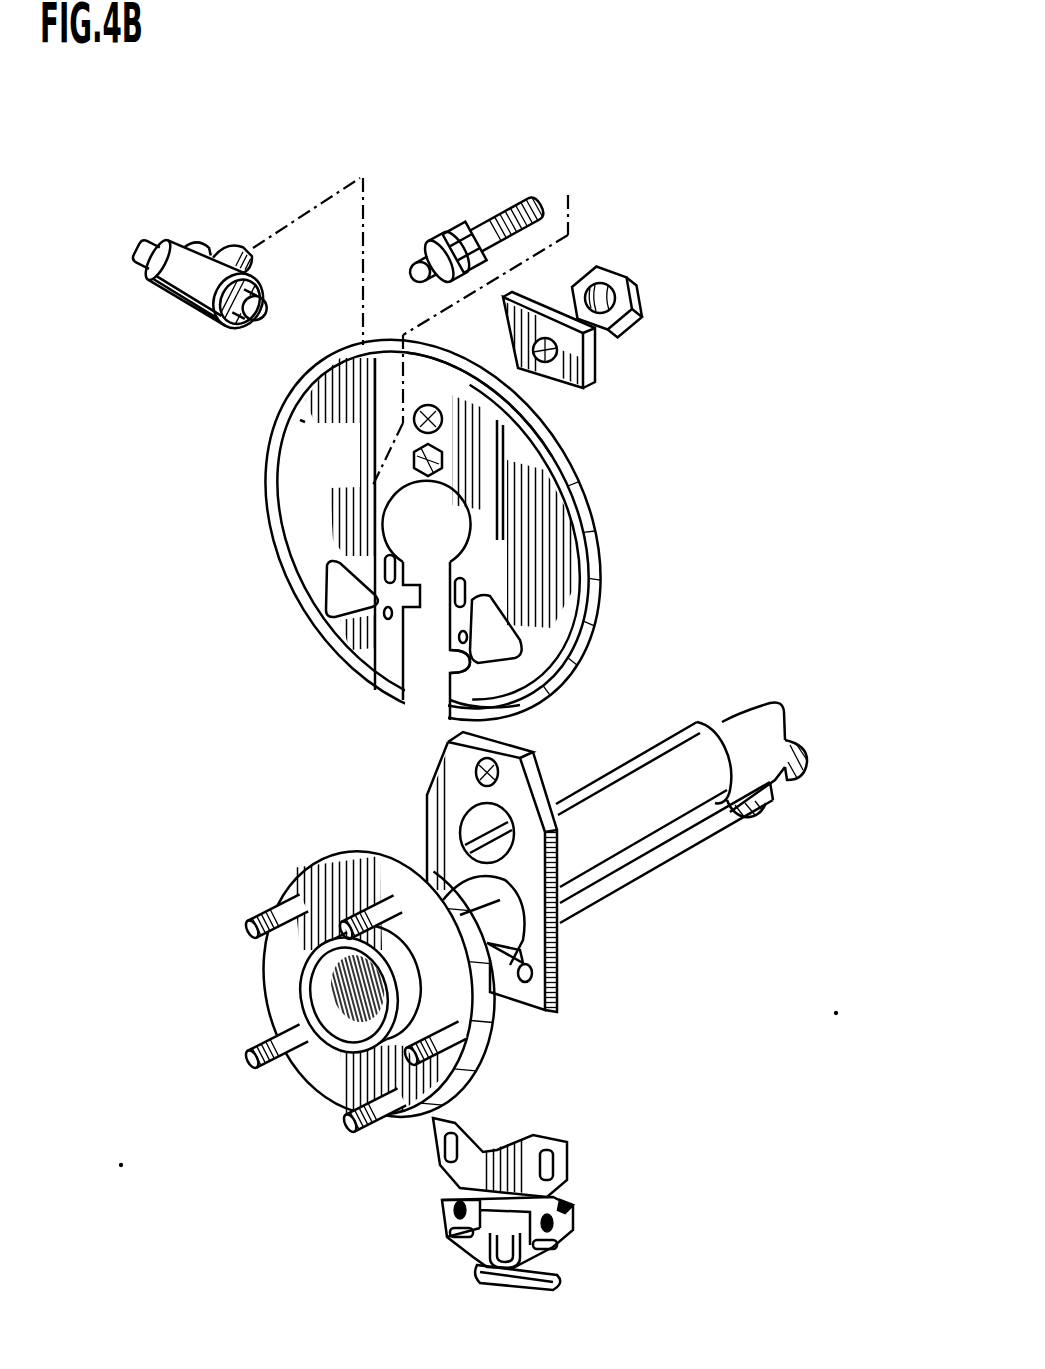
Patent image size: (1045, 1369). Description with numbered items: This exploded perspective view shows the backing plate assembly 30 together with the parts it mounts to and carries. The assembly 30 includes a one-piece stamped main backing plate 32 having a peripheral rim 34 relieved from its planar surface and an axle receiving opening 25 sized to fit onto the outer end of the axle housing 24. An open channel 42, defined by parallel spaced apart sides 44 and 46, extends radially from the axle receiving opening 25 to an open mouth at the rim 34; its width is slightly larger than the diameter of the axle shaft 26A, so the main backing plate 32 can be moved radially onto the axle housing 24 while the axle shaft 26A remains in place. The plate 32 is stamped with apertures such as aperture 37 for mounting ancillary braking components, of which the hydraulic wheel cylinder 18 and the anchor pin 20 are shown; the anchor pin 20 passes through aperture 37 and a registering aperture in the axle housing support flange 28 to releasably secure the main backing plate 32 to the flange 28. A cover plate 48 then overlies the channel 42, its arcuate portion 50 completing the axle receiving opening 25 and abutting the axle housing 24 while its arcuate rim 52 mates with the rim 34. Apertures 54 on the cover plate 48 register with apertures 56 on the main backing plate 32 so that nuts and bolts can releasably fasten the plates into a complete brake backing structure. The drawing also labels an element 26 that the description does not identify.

The hydraulic wheel cylinder 18 is at (192, 248).
The anchor pin 20 is at (606, 215).
The axle housing 24 is at (684, 856).
The axle receiving opening 25 is at (410, 522).
The hub 26 is at (480, 1050).
The axle shaft 26A is at (788, 765).
The axle housing support flange 28 is at (457, 872).
The backing plate assembly 30 is at (467, 529).
The main backing plate 32 is at (300, 467).
The peripheral rim 34 is at (537, 427).
The aperture 37 is at (473, 770).
The open channel 42 is at (408, 633).
The side 44 is at (422, 585).
The side 46 is at (416, 660).
The cover plate 48 is at (527, 1198).
The arcuate portion 50 is at (503, 1147).
The arcuate rim 52 is at (472, 1265).
The aperture 54 is at (553, 1167).
The aperture 56 is at (453, 703).